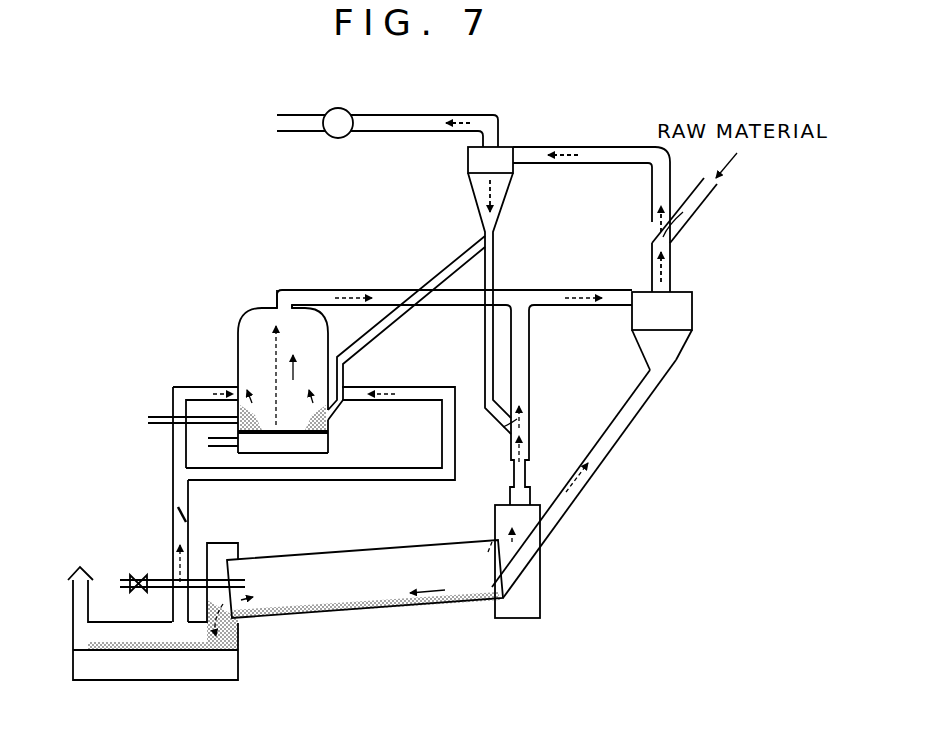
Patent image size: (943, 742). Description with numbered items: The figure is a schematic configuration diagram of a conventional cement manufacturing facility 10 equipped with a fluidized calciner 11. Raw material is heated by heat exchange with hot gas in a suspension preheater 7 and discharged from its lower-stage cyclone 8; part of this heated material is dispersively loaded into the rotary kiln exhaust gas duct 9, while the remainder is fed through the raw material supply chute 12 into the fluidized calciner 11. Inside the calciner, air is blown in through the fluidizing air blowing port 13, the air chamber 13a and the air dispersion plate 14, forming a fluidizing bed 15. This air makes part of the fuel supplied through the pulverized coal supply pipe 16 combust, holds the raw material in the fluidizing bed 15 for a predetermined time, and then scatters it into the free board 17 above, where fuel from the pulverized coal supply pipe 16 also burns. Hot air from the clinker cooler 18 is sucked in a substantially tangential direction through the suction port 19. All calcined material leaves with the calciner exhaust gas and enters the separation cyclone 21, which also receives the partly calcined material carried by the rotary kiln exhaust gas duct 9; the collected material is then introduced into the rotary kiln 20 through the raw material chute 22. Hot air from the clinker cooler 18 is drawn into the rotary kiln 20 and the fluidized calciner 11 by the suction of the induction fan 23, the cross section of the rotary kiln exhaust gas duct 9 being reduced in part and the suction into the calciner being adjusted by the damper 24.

The suspension preheater 7 is at (590, 130).
The lower-stage cyclone 8 is at (505, 188).
The rotary kiln exhaust gas duct 9 is at (520, 368).
The cement manufacturing facility 10 is at (178, 235).
The fluidized calciner 11 is at (237, 335).
The raw material supply chute 12 is at (330, 422).
The fluidizing air blowing port 13 is at (220, 445).
The air chamber 13a is at (330, 445).
The air dispersion plate 14 is at (283, 434).
The fluidizing bed 15 is at (302, 427).
The pulverized coal supply pipe 16 is at (160, 415).
The free board 17 is at (292, 388).
The clinker cooler 18 is at (138, 628).
The suction port 19 is at (237, 388).
The rotary kiln 20 is at (347, 587).
The separation cyclone 21 is at (673, 310).
The raw material chute 22 is at (608, 442).
The induction fan 23 is at (338, 138).
The damper 24 is at (178, 507).